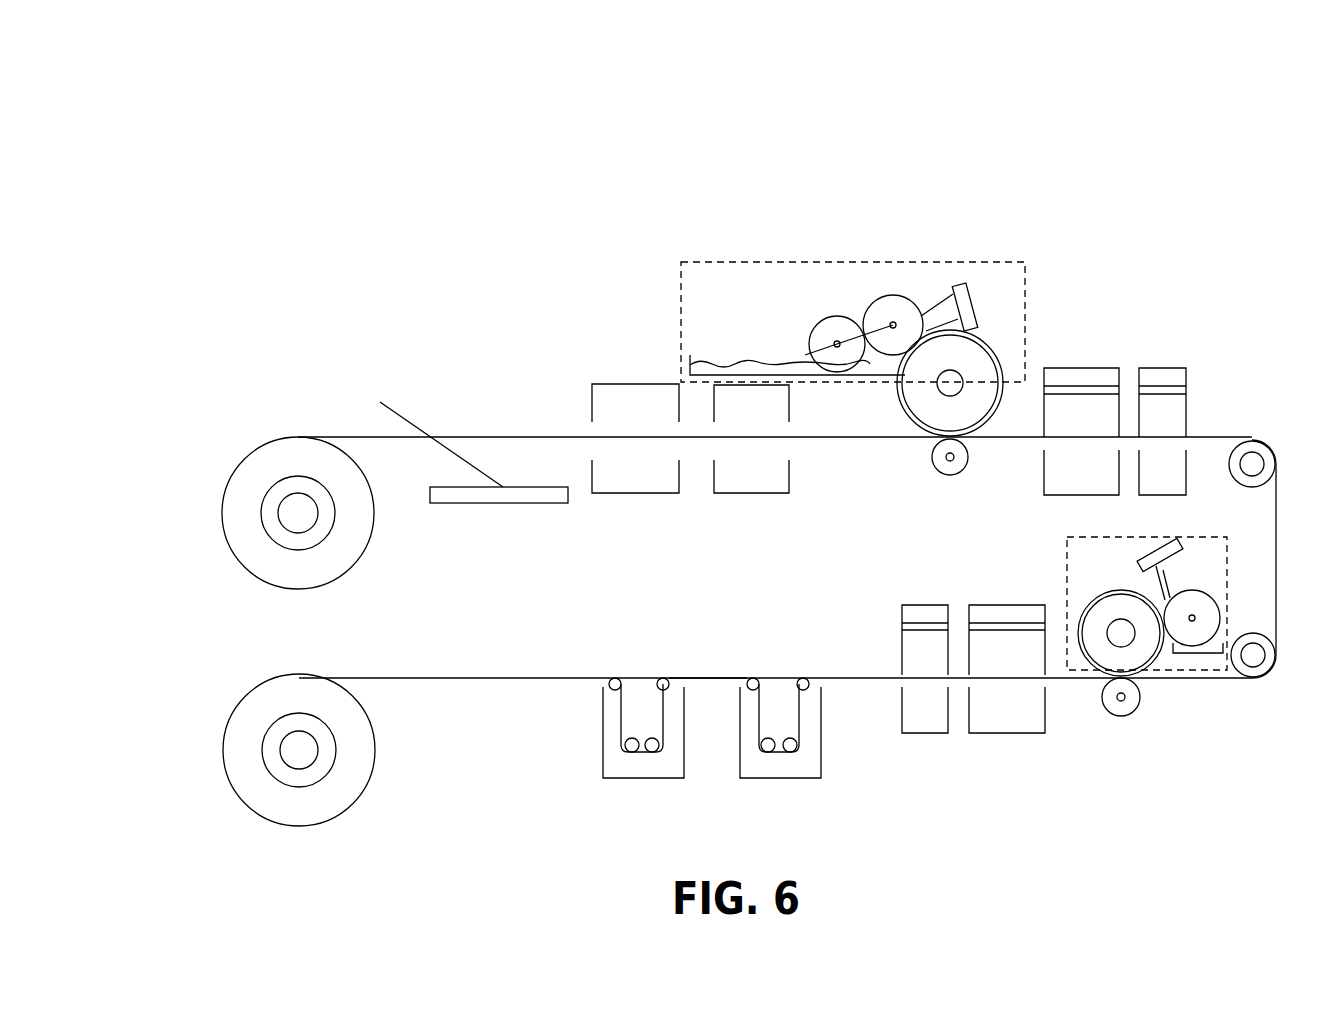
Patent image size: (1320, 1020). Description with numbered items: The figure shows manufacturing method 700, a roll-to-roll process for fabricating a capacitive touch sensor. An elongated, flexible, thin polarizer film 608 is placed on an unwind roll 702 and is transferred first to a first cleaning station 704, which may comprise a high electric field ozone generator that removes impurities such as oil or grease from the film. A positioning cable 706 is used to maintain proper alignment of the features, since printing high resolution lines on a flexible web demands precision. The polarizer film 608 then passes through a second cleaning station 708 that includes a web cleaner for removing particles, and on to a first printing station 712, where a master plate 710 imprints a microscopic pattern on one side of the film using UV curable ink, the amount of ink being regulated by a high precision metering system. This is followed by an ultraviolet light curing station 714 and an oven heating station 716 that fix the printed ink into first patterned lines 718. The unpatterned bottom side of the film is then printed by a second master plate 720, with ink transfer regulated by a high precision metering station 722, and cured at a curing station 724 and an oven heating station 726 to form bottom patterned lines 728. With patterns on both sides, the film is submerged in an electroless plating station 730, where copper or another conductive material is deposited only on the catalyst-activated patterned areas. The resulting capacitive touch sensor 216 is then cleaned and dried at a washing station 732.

The manufacturing method 700 is at (172, 134).
The unwind roll 702 is at (255, 462).
The polarizer film 608 is at (336, 437).
The first cleaning station 704 is at (592, 413).
The positioning cable 706 is at (478, 497).
The second cleaning station 708 is at (748, 486).
The master plate 710 is at (935, 415).
The first printing station 712 is at (682, 263).
The curing station 714 is at (1092, 374).
The oven heating station 716 is at (1160, 382).
The first patterned lines 718 is at (1220, 437).
The second master plate 720 is at (1138, 657).
The high precision metering station 722 is at (1067, 540).
The curing station 724 is at (995, 610).
The oven heating station 726 is at (915, 610).
The bottom patterned lines 728 is at (862, 680).
The electroless plating station 730 is at (778, 722).
The washing station 732 is at (637, 722).
The capacitive touch sensor 216 is at (700, 676).